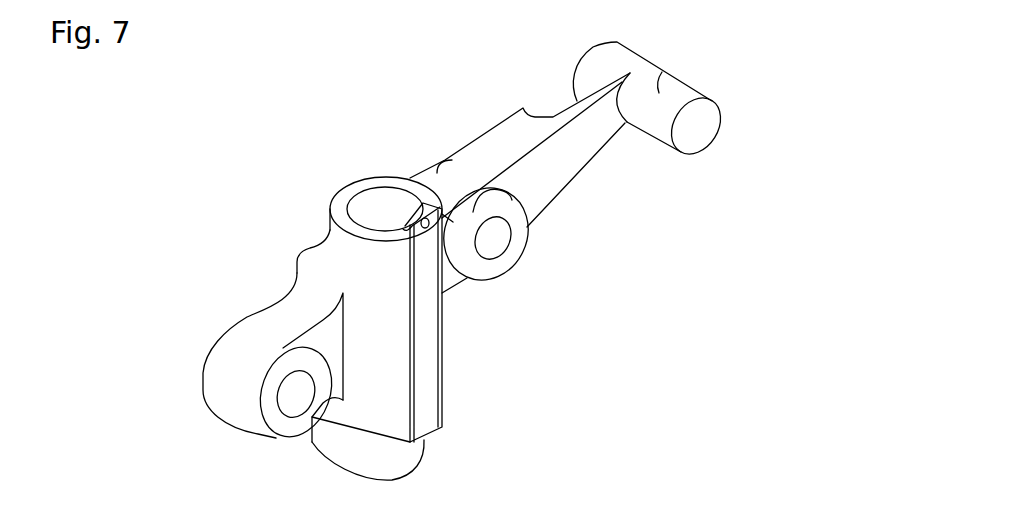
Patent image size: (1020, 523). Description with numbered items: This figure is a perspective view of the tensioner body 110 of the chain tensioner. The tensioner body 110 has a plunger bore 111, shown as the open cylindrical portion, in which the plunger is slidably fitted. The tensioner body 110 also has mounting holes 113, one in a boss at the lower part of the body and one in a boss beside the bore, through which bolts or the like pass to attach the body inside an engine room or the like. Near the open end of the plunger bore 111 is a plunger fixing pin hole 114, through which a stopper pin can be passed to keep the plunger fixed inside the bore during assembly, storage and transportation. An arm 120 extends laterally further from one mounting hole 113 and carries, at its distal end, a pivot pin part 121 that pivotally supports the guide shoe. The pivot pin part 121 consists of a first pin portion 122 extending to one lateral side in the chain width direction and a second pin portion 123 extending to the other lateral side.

The tensioner body 110 is at (262, 220).
The plunger bore 111 is at (390, 208).
The mounting holes 113 is at (508, 234).
The plunger fixing pin hole 114 is at (430, 224).
The arm 120 is at (550, 170).
The pivot pin part 121 is at (760, 28).
The first pin portion 122 is at (660, 74).
The second pin portion 123 is at (597, 36).